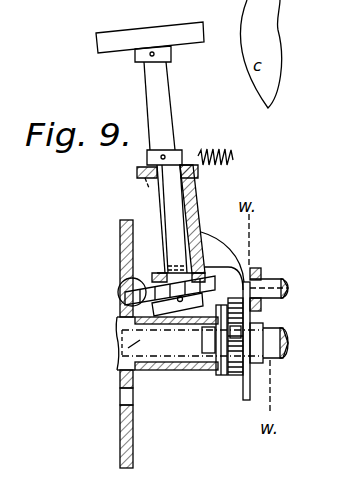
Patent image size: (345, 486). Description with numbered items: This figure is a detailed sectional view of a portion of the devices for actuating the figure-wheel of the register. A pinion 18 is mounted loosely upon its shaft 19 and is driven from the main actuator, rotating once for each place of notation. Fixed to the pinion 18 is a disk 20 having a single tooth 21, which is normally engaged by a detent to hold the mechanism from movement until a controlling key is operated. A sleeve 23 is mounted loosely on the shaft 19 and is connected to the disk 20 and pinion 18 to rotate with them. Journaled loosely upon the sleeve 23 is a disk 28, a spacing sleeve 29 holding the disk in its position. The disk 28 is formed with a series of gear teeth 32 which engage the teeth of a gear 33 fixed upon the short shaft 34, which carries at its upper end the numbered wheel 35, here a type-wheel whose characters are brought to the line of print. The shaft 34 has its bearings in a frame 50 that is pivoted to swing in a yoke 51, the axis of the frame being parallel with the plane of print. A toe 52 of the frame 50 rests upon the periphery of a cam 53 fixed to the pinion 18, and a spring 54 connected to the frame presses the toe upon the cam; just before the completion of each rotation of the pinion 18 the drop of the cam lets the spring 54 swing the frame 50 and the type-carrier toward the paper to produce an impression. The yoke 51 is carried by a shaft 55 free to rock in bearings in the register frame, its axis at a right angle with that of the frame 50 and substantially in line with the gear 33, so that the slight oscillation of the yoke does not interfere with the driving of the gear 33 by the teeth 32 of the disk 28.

The pinion 18 is at (232, 392).
The shaft 19 is at (118, 340).
The disk 20 is at (230, 380).
The tooth 21 is at (220, 368).
The sleeve 23 is at (140, 345).
The disk 28 is at (133, 440).
The spacing sleeve 29 is at (165, 368).
The gear teeth 32 is at (120, 290).
The gear 33 is at (147, 276).
The short shaft 34 is at (163, 112).
The numbered wheel 35 is at (194, 33).
The frame 50 is at (199, 199).
The yoke 51 is at (258, 274).
The toe 52 is at (215, 252).
The cam 53 is at (245, 400).
The spring 54 is at (216, 152).
The shaft 55 is at (287, 281).